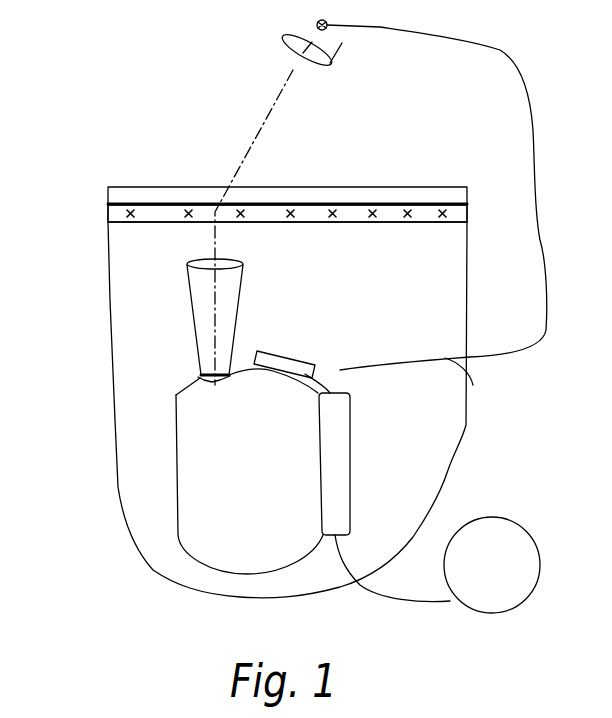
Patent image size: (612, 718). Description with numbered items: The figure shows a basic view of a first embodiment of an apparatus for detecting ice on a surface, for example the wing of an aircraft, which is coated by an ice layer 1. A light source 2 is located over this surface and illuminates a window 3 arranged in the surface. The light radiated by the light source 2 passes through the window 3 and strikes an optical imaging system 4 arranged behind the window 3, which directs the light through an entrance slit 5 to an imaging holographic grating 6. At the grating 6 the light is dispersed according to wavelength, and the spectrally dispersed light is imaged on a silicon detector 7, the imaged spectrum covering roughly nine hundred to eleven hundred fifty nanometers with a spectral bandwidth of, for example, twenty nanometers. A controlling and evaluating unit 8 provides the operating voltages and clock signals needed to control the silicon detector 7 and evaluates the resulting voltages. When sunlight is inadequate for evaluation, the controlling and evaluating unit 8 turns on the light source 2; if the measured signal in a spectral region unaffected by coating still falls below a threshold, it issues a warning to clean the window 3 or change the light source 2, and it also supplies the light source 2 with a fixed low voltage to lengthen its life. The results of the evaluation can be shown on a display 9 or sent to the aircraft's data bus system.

The ice layer 1 is at (108, 196).
The light source 2 is at (318, 27).
The window 3 is at (108, 225).
The optical imaging system 4 is at (187, 266).
The entrance slit 5 is at (202, 375).
The imaging holographic grating 6 is at (200, 426).
The silicon detector 7 is at (340, 389).
The controlling and evaluating unit 8 is at (332, 428).
The display 9 is at (458, 552).